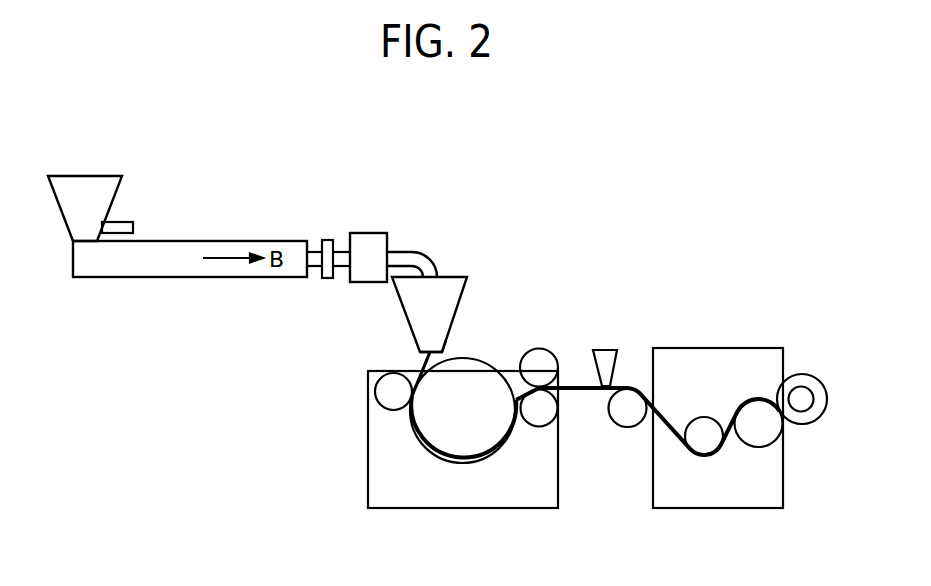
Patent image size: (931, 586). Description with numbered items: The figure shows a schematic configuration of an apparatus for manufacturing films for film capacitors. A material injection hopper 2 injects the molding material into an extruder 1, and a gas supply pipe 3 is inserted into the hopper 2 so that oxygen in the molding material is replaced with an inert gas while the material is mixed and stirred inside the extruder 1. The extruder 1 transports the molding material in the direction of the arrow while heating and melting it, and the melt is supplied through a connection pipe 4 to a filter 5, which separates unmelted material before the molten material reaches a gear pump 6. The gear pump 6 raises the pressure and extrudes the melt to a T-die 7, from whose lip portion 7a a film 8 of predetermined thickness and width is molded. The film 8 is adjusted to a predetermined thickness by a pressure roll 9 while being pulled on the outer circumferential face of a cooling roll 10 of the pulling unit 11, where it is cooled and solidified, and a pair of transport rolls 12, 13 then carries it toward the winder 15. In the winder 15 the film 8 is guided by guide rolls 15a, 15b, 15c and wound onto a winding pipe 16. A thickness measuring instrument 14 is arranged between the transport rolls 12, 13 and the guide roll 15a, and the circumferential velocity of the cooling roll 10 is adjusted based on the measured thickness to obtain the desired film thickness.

The extruder 1 is at (148, 267).
The material injection hopper 2 is at (118, 198).
The gas supply pipe 3 is at (127, 230).
The connection pipe 4 is at (313, 250).
The filter 5 is at (328, 242).
The gear pump 6 is at (368, 245).
The T-die 7 is at (443, 288).
The lip portion 7a is at (438, 345).
The film 8 is at (422, 367).
The pressure roll 9 is at (387, 392).
The cooling roll 10 is at (475, 375).
The pulling unit 11 is at (401, 488).
The transport roll 12 is at (543, 358).
The transport roll 13 is at (540, 408).
The thickness measuring instrument 14 is at (608, 358).
The winder 15 is at (681, 488).
The guide roll 15a is at (628, 408).
The guide roll 15b is at (705, 430).
The guide roll 15c is at (768, 428).
The winding pipe 16 is at (813, 365).